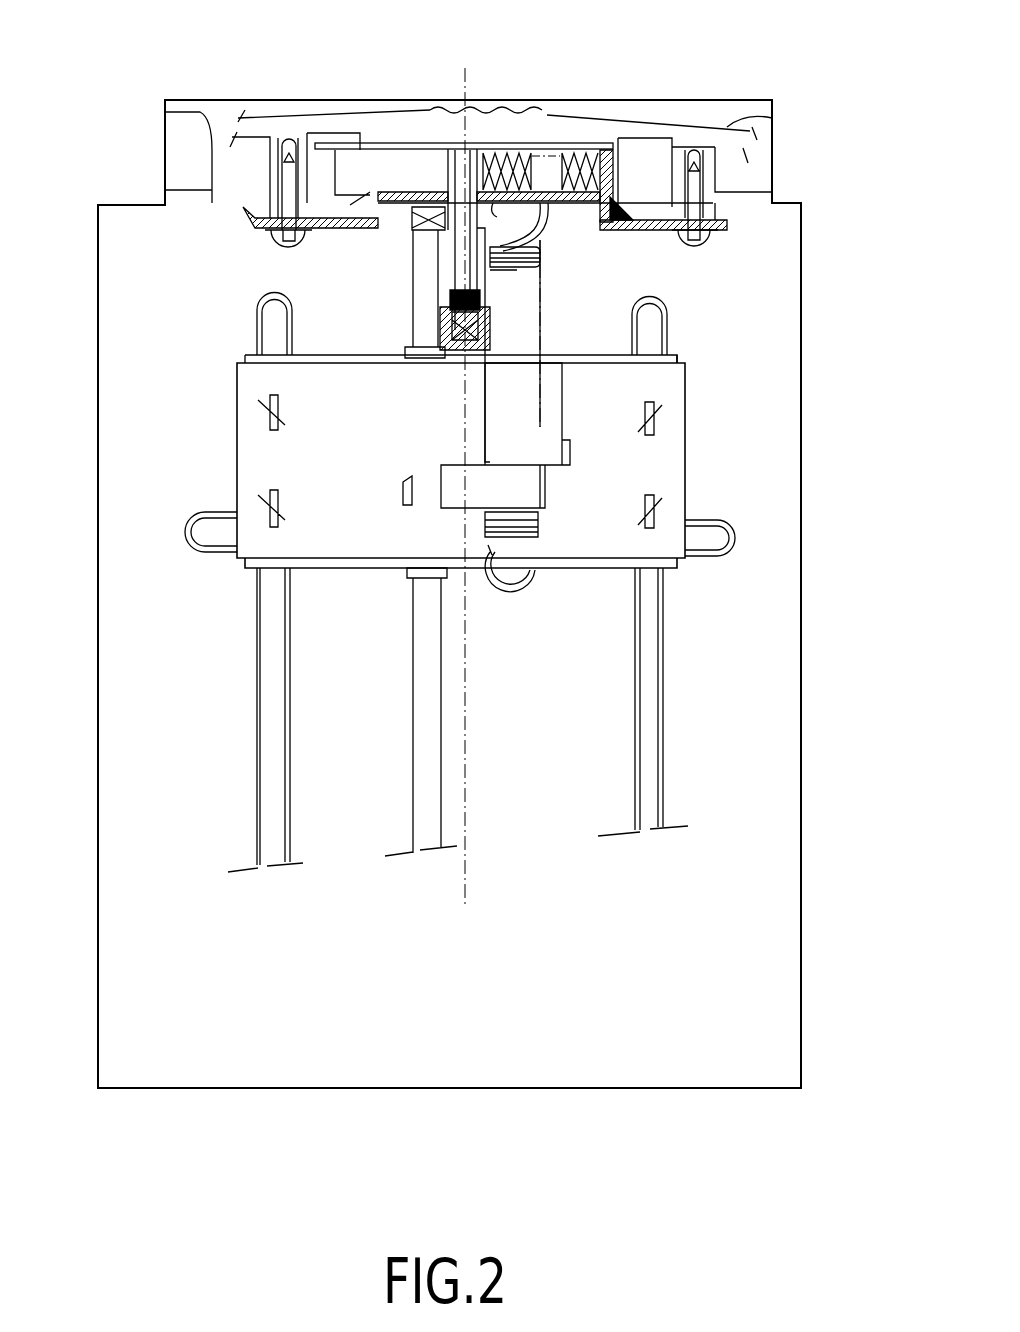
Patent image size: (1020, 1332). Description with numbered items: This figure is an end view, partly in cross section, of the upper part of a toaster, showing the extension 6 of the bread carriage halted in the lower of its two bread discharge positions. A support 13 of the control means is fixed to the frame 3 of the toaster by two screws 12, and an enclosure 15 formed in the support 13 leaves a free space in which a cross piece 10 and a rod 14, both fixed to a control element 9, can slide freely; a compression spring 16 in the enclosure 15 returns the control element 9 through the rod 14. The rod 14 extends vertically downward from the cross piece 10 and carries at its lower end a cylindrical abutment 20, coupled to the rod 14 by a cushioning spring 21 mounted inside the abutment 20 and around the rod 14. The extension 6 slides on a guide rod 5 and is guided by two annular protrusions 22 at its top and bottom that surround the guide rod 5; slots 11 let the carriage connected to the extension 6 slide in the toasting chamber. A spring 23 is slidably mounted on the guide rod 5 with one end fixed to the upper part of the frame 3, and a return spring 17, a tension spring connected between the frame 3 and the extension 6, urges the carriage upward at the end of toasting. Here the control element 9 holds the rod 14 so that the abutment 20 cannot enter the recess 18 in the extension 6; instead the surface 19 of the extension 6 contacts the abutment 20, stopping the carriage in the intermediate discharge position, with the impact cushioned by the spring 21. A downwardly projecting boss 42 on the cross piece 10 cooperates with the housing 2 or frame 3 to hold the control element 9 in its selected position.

The housing 2 is at (262, 123).
The frame 3 is at (118, 195).
The guide rod 5 is at (425, 808).
The extension 6 is at (650, 460).
The control element 9 is at (478, 120).
The cross piece 10 is at (352, 142).
The slots 11 is at (268, 818).
The screws 12 is at (268, 240).
The support 13 is at (650, 231).
The rod 14 is at (490, 152).
The enclosure 15 is at (424, 173).
The compression spring 16 is at (605, 150).
The return spring 17 is at (540, 258).
The recess 18 is at (553, 385).
The surface 19 is at (310, 356).
The abutment 20 is at (483, 342).
The cushioning spring 21 is at (443, 323).
The annular protrusions 22 is at (413, 578).
The spring 23 is at (420, 247).
The boss 42 is at (565, 153).